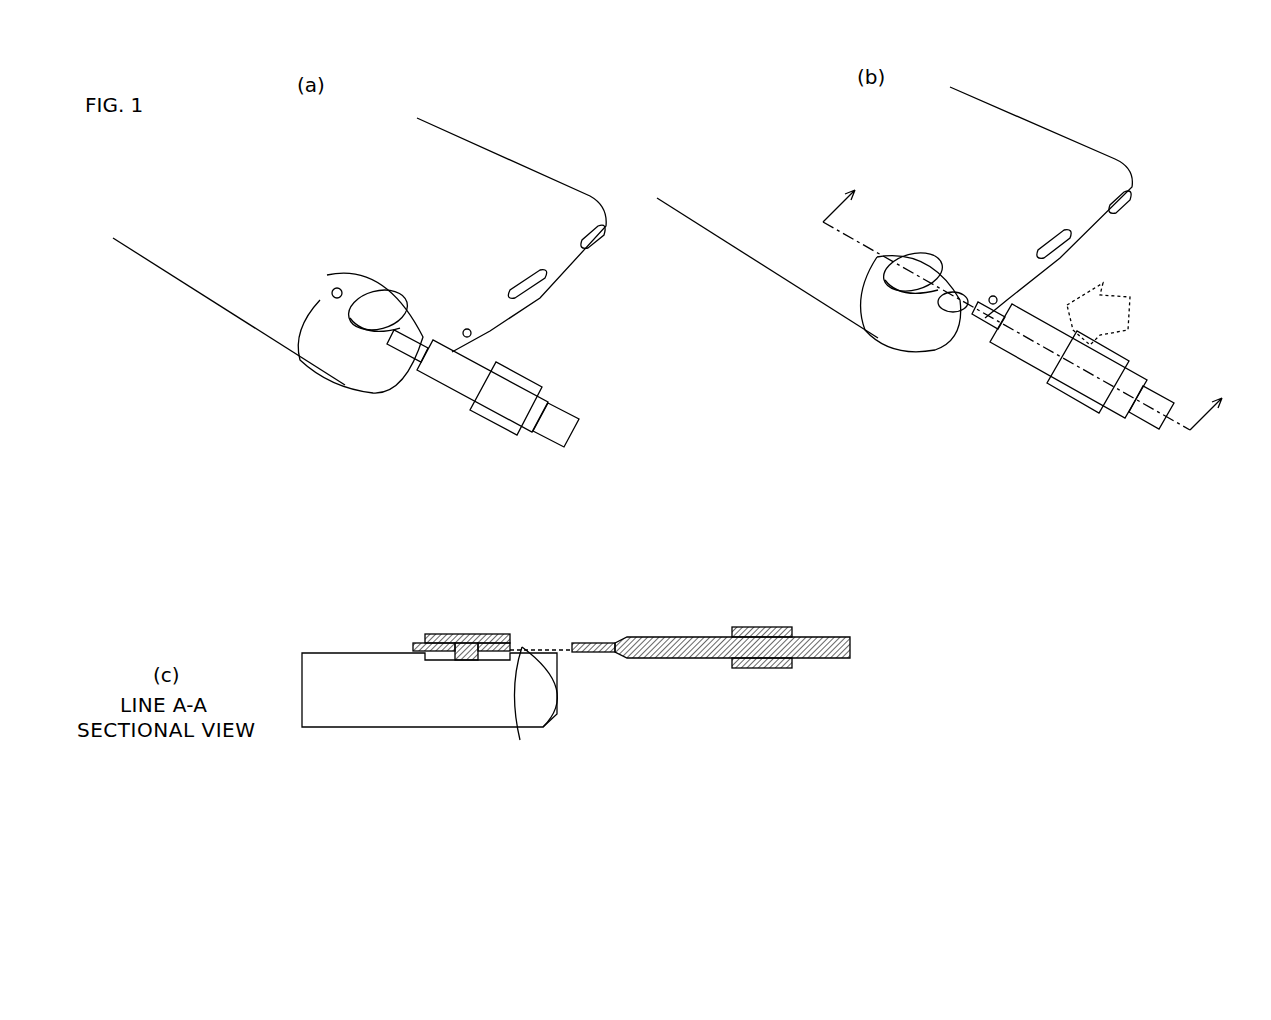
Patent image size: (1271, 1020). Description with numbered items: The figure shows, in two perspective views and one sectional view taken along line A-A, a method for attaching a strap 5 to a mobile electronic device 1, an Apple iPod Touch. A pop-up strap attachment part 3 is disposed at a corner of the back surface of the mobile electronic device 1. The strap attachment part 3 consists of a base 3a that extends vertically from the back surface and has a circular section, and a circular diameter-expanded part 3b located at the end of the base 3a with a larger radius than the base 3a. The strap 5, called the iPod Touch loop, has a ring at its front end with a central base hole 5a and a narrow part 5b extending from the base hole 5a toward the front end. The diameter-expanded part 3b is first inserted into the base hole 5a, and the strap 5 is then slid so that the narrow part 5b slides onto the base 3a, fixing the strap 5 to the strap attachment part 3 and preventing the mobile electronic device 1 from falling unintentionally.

The mobile electronic device 1 is at (167, 273).
The strap attachment part 3 is at (355, 320).
The base 3a is at (468, 643).
The diameter-expanded part 3b is at (486, 643).
The strap 5 is at (565, 410).
The base hole 5a is at (955, 312).
The narrow part 5b is at (337, 293).